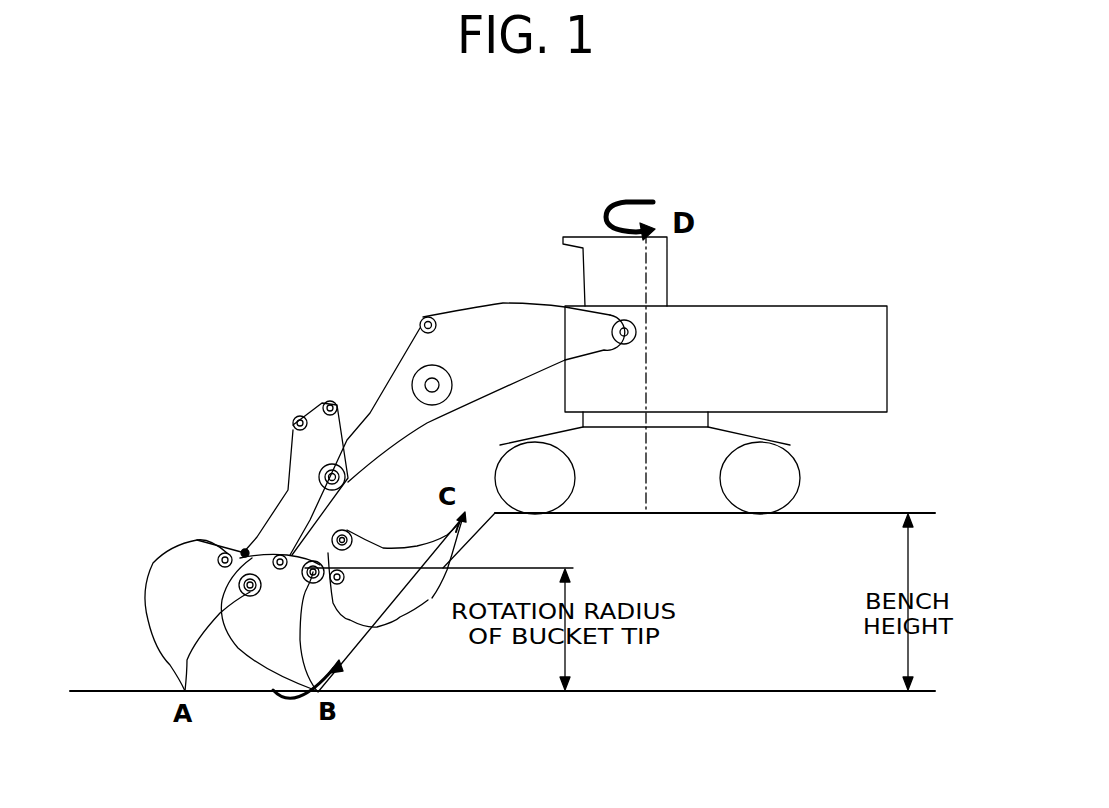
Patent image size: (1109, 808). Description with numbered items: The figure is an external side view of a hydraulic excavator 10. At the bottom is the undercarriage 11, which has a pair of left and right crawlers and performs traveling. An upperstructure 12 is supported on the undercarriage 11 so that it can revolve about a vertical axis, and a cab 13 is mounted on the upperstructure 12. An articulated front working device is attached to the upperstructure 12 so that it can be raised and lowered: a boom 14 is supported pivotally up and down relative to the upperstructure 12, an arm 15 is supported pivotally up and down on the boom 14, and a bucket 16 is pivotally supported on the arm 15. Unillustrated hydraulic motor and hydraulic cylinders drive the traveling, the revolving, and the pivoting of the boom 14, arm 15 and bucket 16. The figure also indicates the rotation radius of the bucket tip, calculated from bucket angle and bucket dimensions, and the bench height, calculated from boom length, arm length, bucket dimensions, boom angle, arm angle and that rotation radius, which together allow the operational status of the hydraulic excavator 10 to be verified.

The hydraulic excavator 10 is at (808, 167).
The undercarriage 11 is at (800, 473).
The upperstructure 12 is at (887, 350).
The cab 13 is at (662, 265).
The boom 14 is at (512, 298).
The arm 15 is at (280, 490).
The bucket 16 is at (160, 553).